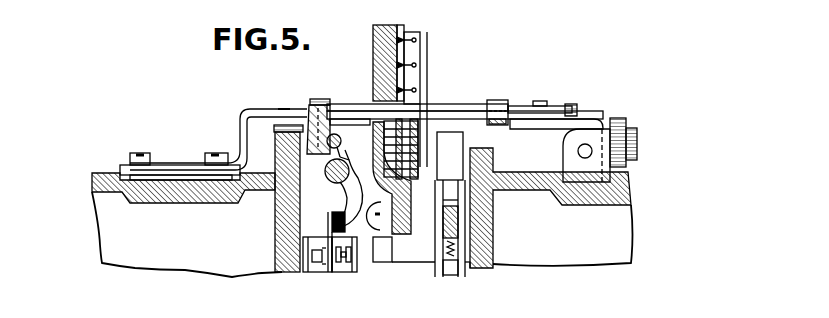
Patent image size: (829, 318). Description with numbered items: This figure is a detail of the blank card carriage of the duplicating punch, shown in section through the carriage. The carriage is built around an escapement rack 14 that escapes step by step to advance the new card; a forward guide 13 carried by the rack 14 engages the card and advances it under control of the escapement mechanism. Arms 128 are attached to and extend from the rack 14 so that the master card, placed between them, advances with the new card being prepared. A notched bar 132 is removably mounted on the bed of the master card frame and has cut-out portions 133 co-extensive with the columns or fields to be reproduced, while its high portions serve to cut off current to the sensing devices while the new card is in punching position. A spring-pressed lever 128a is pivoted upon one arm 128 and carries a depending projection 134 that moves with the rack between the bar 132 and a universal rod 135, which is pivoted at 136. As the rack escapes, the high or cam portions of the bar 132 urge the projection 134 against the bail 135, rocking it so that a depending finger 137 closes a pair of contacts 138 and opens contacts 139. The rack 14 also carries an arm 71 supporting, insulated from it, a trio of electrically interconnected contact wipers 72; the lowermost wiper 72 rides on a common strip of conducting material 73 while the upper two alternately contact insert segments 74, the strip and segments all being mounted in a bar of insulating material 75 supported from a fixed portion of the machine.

The forward guide 13 is at (574, 174).
The escapement rack 14 is at (426, 135).
The arm 71 is at (427, 92).
The contact wipers 72 is at (400, 88).
The common strip of conducting material 73 is at (373, 88).
The insert segments 74 is at (401, 39).
The bar of insulating material 75 is at (373, 38).
The arms 128 is at (258, 110).
The spring-pressed lever 128a is at (461, 104).
The notched bar 132 is at (284, 108).
The cut-out portions 133 is at (316, 98).
The depending projection 134 is at (281, 192).
The universal rod 135 is at (342, 139).
The pivot 136 is at (328, 178).
The depending finger 137 is at (357, 213).
The contacts 138 is at (323, 265).
The contacts 139 is at (340, 266).